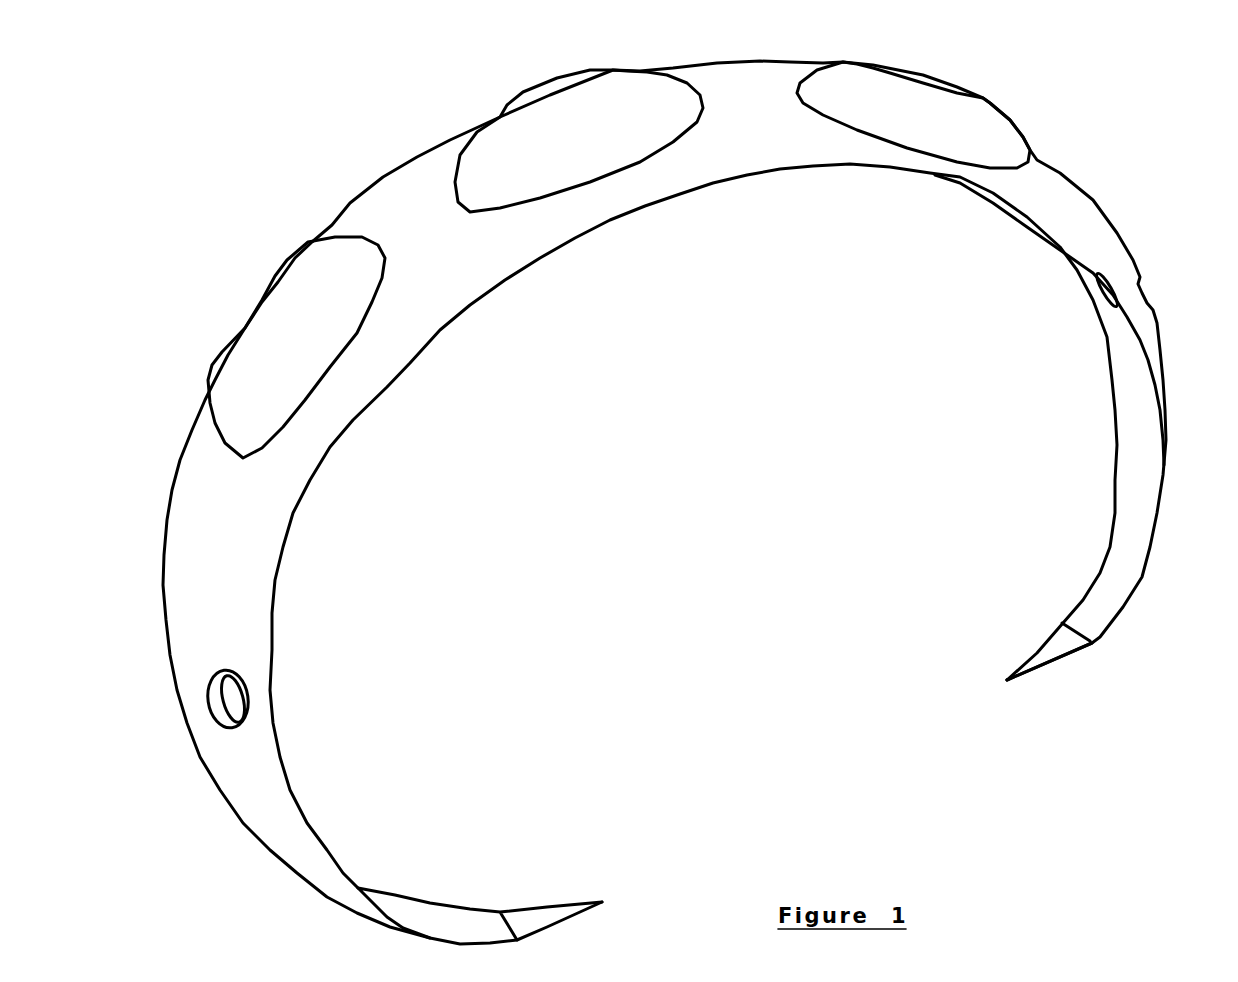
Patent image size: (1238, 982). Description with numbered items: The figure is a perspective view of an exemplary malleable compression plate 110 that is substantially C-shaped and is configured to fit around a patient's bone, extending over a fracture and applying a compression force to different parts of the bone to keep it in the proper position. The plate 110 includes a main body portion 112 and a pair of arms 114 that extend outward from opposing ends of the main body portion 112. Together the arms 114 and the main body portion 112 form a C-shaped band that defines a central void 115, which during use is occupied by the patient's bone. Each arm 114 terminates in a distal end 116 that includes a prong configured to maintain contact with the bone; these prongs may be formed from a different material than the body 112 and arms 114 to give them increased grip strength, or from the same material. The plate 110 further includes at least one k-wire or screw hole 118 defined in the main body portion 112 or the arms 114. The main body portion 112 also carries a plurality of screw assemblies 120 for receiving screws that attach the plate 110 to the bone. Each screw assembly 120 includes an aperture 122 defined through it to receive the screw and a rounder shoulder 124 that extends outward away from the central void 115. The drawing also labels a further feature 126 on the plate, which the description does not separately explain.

The malleable compression plate 110 is at (305, 108).
The main body portion 112 is at (664, 502).
The arms 114 is at (1123, 468).
The central void 115 is at (693, 526).
The distal end 116 is at (543, 913).
The k-wire or screw hole 118 is at (225, 730).
The screw assemblies 120 is at (297, 360).
The aperture 122 is at (245, 311).
The rounder shoulder 124 is at (670, 112).
The pocket 126 is at (1020, 133).